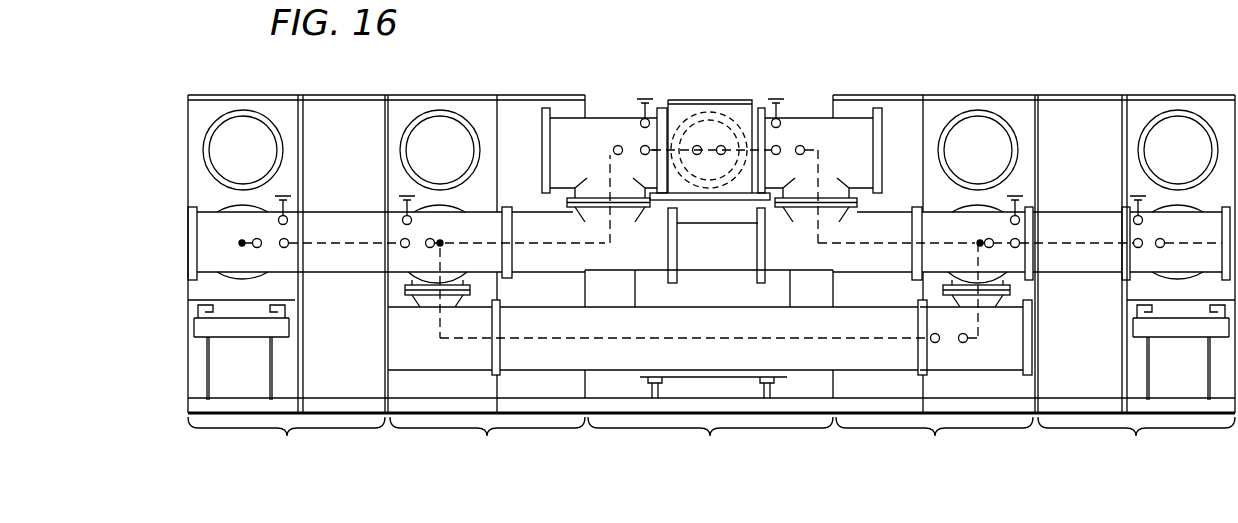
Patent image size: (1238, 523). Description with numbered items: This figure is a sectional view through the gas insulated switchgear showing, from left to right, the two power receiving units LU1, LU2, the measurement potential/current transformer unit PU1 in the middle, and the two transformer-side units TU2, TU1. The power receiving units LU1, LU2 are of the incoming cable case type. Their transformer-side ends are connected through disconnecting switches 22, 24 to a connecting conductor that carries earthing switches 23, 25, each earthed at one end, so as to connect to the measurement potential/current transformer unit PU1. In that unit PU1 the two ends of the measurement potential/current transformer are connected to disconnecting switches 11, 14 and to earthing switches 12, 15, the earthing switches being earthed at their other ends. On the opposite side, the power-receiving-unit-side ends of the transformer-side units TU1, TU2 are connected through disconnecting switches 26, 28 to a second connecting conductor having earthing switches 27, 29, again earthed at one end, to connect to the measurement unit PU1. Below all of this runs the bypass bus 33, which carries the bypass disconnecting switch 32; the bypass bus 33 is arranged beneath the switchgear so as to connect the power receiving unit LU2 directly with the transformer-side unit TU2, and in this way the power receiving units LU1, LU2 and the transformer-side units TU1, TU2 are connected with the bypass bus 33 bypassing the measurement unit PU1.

The disconnecting switch 11 is at (642, 144).
The earthing switch 12 is at (645, 101).
The disconnecting switch 14 is at (781, 144).
The earthing switch 15 is at (784, 100).
The disconnecting switch 22 is at (283, 249).
The earthing switch 23 is at (290, 195).
The disconnecting switch 24 is at (392, 264).
The earthing switch 25 is at (404, 197).
The disconnecting switch 26 is at (1147, 252).
The earthing switch 27 is at (1136, 196).
The disconnecting switch 28 is at (1007, 246).
The earthing switch 29 is at (1020, 192).
The bypass disconnecting switch 32 is at (940, 340).
The bypass bus 33 is at (866, 334).
The power receiving unit LU1 is at (283, 454).
The power receiving unit LU2 is at (479, 454).
The measurement potential/current transformer unit PU1 is at (711, 454).
The transformer-side unit TU2 is at (916, 454).
The transformer-side unit TU1 is at (1125, 454).